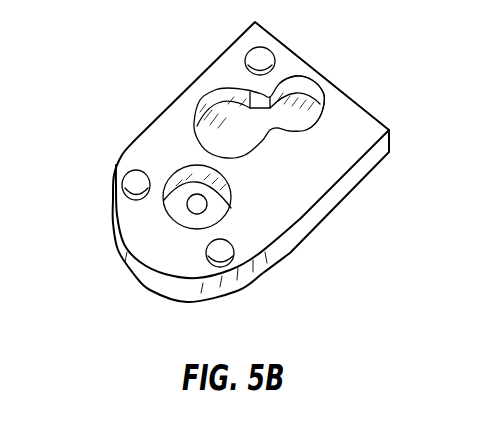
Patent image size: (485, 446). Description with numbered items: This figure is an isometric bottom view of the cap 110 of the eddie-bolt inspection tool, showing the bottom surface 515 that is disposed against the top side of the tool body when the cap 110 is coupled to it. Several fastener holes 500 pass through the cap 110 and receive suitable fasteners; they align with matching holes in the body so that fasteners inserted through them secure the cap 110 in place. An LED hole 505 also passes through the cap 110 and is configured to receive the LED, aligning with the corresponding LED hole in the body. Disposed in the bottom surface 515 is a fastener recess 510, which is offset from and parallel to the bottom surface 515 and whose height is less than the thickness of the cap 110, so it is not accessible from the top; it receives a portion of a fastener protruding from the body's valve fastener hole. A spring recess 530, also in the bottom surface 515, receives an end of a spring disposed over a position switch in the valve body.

The cap 110 is at (331, 303).
The fastener holes 500 is at (258, 60).
The LED hole 505 is at (312, 100).
The fastener recess 510 is at (227, 128).
The bottom surface 515 is at (297, 197).
The spring recess 530 is at (229, 183).